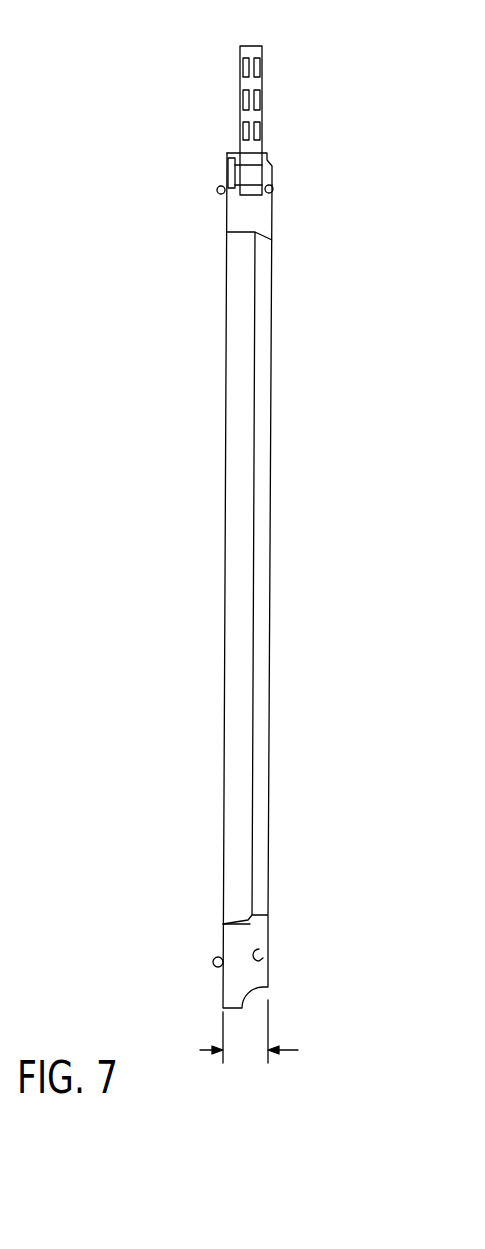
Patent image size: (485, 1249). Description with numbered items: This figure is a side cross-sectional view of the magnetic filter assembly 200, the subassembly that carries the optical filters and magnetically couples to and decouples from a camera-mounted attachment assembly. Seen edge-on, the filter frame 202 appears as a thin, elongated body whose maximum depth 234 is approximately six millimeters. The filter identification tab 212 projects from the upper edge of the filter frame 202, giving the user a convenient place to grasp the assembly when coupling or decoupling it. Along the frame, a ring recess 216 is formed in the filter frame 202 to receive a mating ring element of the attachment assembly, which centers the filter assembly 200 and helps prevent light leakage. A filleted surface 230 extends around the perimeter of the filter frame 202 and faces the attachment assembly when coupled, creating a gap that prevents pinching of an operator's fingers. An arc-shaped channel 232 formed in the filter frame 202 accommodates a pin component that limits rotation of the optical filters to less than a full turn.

The magnetic filter assembly 200 is at (112, 93).
The filter frame 202 is at (226, 208).
The filter identification tab 212 is at (263, 82).
The ring recess 216 is at (273, 188).
The filleted surface 230 is at (272, 158).
The arc-shaped channel 232 is at (218, 189).
The maximum depth 234 is at (288, 1050).